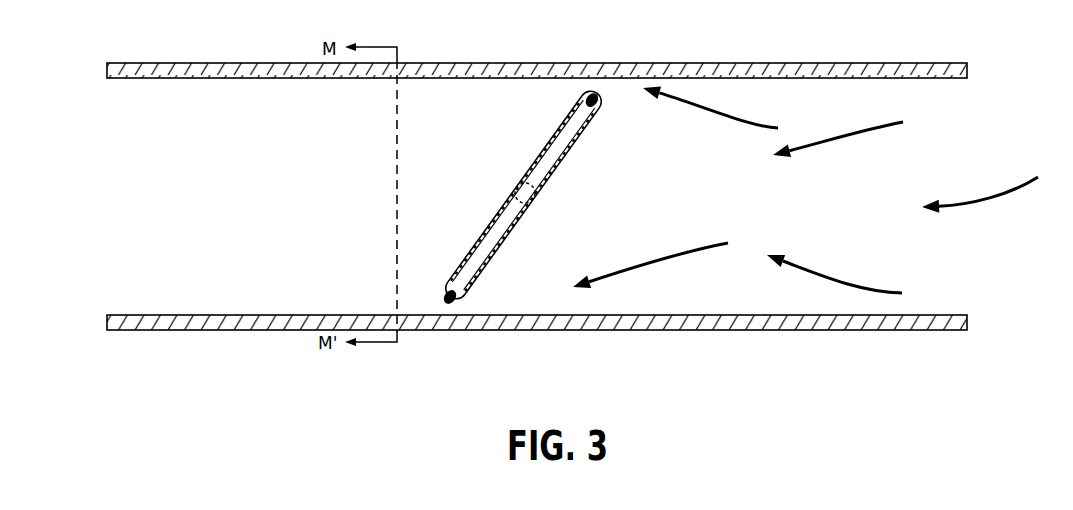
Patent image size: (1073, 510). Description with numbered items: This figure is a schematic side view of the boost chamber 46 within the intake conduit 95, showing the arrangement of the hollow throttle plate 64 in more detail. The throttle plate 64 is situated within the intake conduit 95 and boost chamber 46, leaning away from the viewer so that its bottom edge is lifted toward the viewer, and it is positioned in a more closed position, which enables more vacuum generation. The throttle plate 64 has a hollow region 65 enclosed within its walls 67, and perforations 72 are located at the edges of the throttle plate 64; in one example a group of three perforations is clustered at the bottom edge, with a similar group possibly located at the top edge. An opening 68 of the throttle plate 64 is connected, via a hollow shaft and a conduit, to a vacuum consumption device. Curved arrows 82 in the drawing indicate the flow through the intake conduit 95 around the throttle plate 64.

The boost chamber 46 is at (740, 208).
The throttle plate 64 is at (500, 210).
The hollow region 65 is at (562, 145).
The walls 67 is at (490, 272).
The opening 68 is at (532, 182).
The perforations 72 is at (447, 305).
The airflow 82 is at (857, 133).
The intake conduit 95 is at (695, 330).